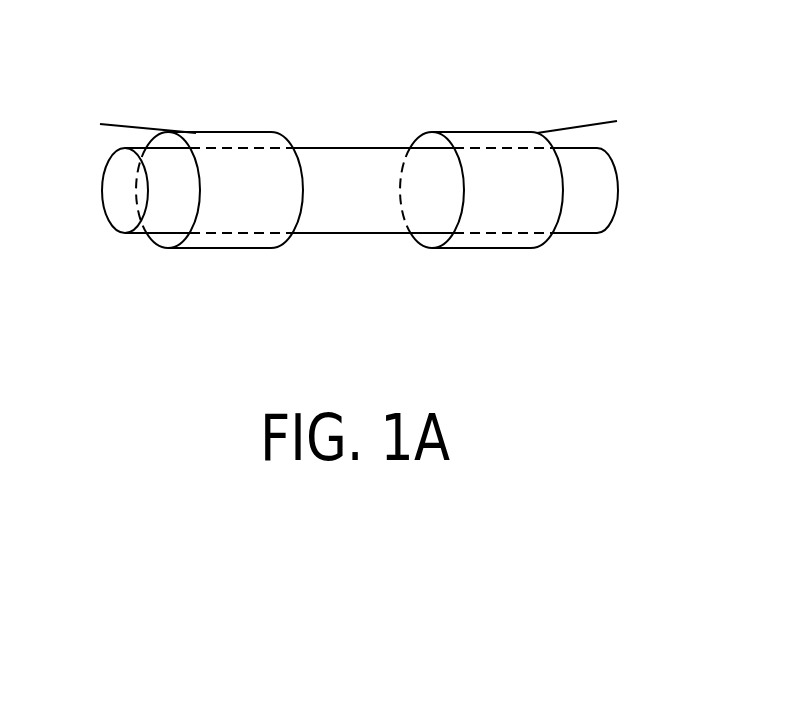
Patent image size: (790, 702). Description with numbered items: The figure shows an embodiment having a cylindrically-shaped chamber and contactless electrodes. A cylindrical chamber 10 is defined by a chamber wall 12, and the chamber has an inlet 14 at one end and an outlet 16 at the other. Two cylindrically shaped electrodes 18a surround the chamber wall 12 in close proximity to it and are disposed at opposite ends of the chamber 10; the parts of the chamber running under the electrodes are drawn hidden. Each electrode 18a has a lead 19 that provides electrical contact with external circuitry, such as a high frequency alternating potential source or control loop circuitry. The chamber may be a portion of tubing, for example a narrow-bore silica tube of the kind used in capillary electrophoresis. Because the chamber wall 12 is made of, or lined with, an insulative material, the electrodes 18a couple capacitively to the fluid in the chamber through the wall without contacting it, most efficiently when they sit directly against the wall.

The cylindrical chamber 10 is at (360, 157).
The chamber wall 12 is at (360, 235).
The inlet 14 is at (110, 190).
The outlet 16 is at (618, 190).
The cylindrically shaped electrodes 18a is at (221, 130).
The lead 19 is at (110, 122).